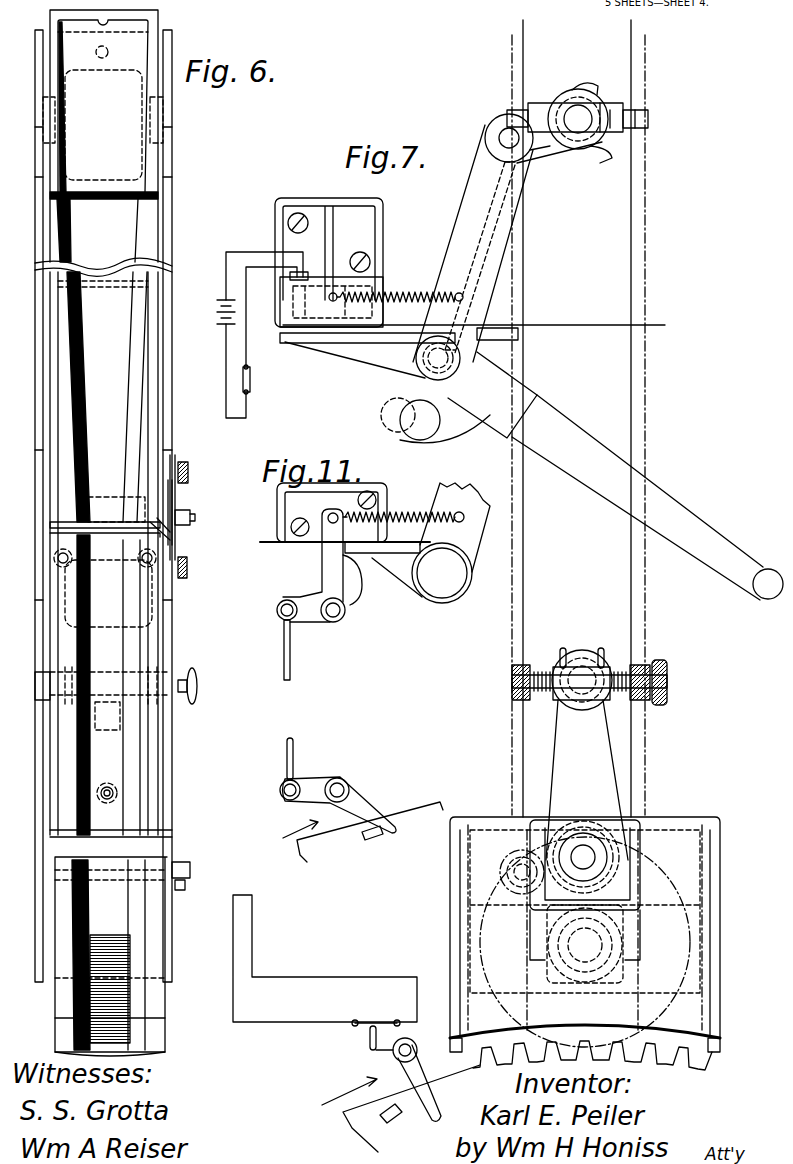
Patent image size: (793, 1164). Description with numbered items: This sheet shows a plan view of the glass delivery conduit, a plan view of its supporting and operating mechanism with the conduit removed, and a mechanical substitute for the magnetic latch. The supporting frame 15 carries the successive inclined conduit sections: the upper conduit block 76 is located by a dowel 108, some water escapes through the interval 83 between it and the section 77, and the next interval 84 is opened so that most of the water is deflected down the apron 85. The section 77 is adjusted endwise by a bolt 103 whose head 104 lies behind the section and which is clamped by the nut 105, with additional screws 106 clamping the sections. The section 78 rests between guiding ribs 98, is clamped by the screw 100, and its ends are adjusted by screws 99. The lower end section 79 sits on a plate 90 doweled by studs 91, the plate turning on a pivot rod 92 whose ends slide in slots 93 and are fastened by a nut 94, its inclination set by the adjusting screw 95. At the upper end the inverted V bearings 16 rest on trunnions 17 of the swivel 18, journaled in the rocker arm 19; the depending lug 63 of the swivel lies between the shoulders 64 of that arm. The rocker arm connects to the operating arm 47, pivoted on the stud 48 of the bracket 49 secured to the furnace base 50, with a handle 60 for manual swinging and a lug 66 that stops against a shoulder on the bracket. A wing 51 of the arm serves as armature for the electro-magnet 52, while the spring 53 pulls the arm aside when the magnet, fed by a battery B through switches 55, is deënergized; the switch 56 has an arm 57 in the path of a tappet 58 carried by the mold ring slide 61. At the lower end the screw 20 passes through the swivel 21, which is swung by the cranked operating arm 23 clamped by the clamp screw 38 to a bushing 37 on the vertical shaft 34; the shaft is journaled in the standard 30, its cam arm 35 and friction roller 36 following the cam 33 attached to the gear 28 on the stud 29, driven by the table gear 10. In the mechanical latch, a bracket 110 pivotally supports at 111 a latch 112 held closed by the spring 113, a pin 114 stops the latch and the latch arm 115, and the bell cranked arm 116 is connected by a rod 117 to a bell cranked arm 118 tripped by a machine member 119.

In FIG. 7, the gear 10 is at (672, 1060).
In FIG. 6, the supporting frame 15 is at (140, 27).
In FIG. 7, the supporting frame 15 is at (645, 228).
In FIG. 6, the inverted V bearings 16 is at (168, 137).
In FIG. 7, the trunnions 17 is at (506, 116).
In FIG. 7, the swivel 18 is at (573, 112).
In FIG. 7, the rocker arm 19 is at (545, 158).
In FIG. 6, the screw 20 is at (145, 695).
In FIG. 7, the screw 20 is at (543, 672).
In FIG. 7, the swivel 21 is at (583, 670).
In FIG. 7, the cranked operating arm 23 is at (608, 755).
In FIG. 7, the gear 28 is at (470, 940).
In FIG. 7, the stud 29 is at (600, 945).
In FIG. 7, the column or standard 30 is at (453, 880).
In FIG. 7, the cam 33 is at (505, 930).
In FIG. 7, the vertical shaft 34 is at (592, 852).
In FIG. 7, the cam arm 35 is at (545, 845).
In FIG. 7, the friction roller 36 is at (525, 865).
In FIG. 7, the bushing 37 is at (583, 835).
In FIG. 7, the clamp screw 38 is at (518, 868).
In FIG. 7, the operating arm 47 is at (485, 280).
In FIG. 7, the stud 48 is at (427, 370).
In FIG. 7, the bracket 49 is at (510, 340).
In FIG. 7, the base or frame 50 is at (665, 330).
In FIG. 7, the wing or armature 51 is at (285, 343).
In FIG. 7, the electro-magnet 52 is at (368, 290).
In FIG. 7, the spring 53 is at (400, 293).
In FIG. 7, the switches or circuit breakers 55 is at (250, 393).
In FIG. 7, the switch 56 is at (373, 1024).
In FIG. 7, the arm 57 is at (398, 1073).
In FIG. 7, the dog or tappet 58 is at (393, 1118).
In FIG. 7, the handle 60 is at (647, 497).
In FIG. 7, the mold ring yoke or slide 61 is at (472, 432).
In FIG. 7, the depending lug 63 is at (625, 108).
In FIG. 7, the shoulders 64 is at (590, 88).
In FIG. 7, the lug 66 is at (418, 440).
In FIG. 6, the conduit block 76 is at (155, 156).
In FIG. 6, the section 77 is at (152, 398).
In FIG. 6, the section 78 is at (160, 634).
In FIG. 6, the lower end section 79 is at (160, 930).
In FIG. 6, the interval or interruption 83 is at (158, 197).
In FIG. 6, the interval 84 is at (108, 530).
In FIG. 6, the deflector or apron 85 is at (100, 497).
In FIG. 6, the plate 90 is at (168, 1005).
In FIG. 6, the studs 91 is at (115, 950).
In FIG. 6, the pivot rod 92 is at (190, 870).
In FIG. 6, the slots 93 is at (175, 893).
In FIG. 6, the nut 94 is at (178, 883).
In FIG. 6, the adjusting screw 95 is at (130, 1035).
In FIG. 6, the guiding ribs 98 is at (66, 568).
In FIG. 6, the screws 99 is at (112, 793).
In FIG. 6, the screw 100 is at (188, 567).
In FIG. 6, the bolt 103 is at (188, 520).
In FIG. 6, the head 104 is at (170, 548).
In FIG. 6, the nut 105 is at (180, 508).
In FIG. 6, the screws 106 is at (188, 473).
In FIG. 6, the dowel 108 is at (109, 52).
In FIG. 11, the bracket 110 is at (296, 542).
In FIG. 11, the pivot 111 is at (336, 622).
In FIG. 11, the latch 112 is at (325, 580).
In FIG. 11, the spring 113 is at (402, 518).
In FIG. 11, the lug or pin 114 is at (366, 548).
In FIG. 11, the latch arm 115 is at (383, 555).
In FIG. 11, the bell cranked arm 116 is at (310, 620).
In FIG. 11, the rod 117 is at (291, 672).
In FIG. 11, the bell cranked arm 118 is at (370, 800).
In FIG. 11, the member 119 is at (365, 840).
In FIG. 7, the battery B is at (217, 303).